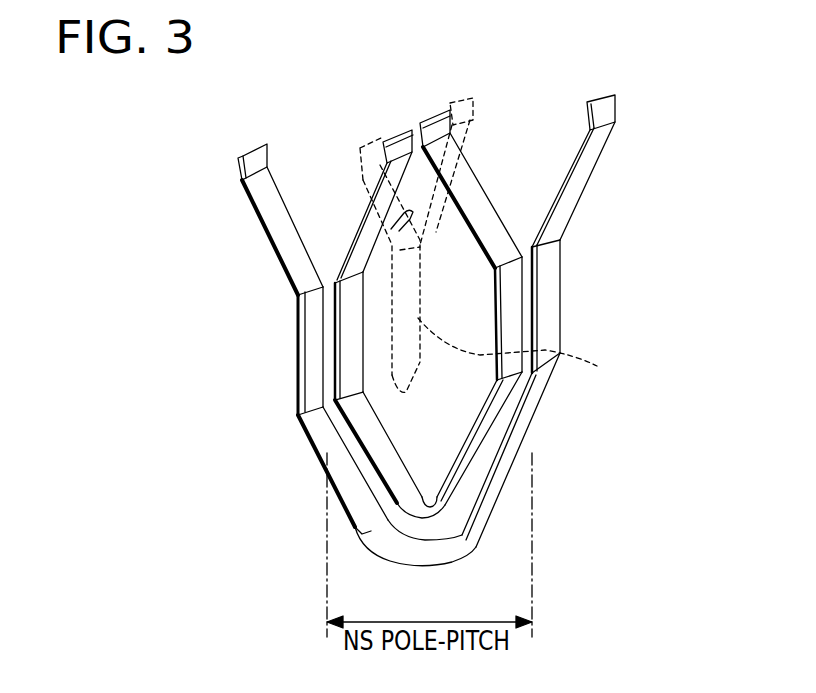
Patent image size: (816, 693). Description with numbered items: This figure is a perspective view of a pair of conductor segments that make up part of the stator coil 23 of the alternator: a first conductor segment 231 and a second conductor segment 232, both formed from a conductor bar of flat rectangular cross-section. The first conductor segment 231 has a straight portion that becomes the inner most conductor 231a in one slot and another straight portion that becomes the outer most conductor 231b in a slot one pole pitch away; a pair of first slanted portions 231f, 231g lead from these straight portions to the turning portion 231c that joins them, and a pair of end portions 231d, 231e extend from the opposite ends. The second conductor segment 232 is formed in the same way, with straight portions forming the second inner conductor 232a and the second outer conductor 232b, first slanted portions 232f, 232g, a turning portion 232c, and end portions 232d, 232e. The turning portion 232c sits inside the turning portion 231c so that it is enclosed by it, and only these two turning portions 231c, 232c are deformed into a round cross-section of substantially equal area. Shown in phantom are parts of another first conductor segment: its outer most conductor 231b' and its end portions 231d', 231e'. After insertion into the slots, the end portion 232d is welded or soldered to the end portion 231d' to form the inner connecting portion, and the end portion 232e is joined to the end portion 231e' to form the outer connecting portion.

The stator coil 23 is at (450, 316).
The first conductor segment 231 is at (450, 316).
The second conductor segment 232 is at (429, 321).
The inner most conductor 231a is at (317, 343).
The outer most conductor 231b is at (602, 306).
The turning portion 231c is at (437, 563).
The end portion 231d is at (260, 188).
The end portion 231e is at (622, 149).
The first slanted portion 231f is at (312, 425).
The first slanted portion 231g is at (520, 438).
The second inner conductor 232a is at (350, 380).
The second outer conductor 232b is at (518, 328).
The turning portion 232c is at (423, 520).
The end portion 232d is at (408, 128).
The end portion 232e is at (440, 118).
The first slanted portion 232f is at (387, 460).
The first slanted portion 232g is at (500, 403).
The outer most conductor of another first conductor segment 231b' is at (539, 352).
The end portion of another first conductor segment 231d' is at (363, 228).
The end portion of another first conductor segment 231e' is at (484, 128).